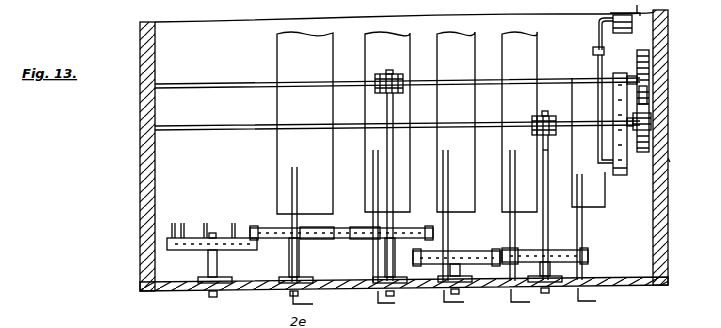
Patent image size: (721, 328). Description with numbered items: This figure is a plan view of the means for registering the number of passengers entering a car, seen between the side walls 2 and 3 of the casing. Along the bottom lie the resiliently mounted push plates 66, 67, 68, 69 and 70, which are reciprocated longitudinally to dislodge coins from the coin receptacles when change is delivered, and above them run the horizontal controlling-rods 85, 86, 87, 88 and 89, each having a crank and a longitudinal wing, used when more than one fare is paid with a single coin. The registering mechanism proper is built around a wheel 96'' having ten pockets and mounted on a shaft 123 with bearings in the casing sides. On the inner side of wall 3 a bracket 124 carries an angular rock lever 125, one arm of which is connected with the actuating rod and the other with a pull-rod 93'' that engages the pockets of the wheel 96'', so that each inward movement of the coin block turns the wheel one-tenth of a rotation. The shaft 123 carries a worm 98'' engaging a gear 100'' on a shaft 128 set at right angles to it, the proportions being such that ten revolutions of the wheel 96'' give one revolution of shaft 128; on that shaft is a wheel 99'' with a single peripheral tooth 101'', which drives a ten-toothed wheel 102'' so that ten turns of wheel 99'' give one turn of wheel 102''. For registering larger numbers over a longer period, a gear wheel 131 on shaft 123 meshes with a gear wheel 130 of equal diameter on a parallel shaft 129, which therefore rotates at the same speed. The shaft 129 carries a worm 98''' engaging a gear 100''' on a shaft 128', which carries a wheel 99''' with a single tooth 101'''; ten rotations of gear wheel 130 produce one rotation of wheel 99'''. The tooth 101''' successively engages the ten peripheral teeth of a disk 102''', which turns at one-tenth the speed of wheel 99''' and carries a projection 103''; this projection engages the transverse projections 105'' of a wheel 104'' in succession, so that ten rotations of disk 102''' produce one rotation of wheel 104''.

The side wall of the casing 2 is at (150, 174).
The side wall of the casing 3 is at (668, 178).
The push plate 66 is at (279, 144).
The push plate 67 is at (374, 160).
The push plate 68 is at (446, 52).
The push plate 69 is at (530, 53).
The push plate 70 is at (600, 207).
The horizontal controlling-rod 85 is at (293, 196).
The horizontal controlling-rod 86 is at (373, 183).
The horizontal controlling-rod 87 is at (443, 181).
The horizontal controlling-rod 88 is at (510, 189).
The horizontal controlling-rod 89 is at (577, 196).
The pull-rod 93'' is at (590, 105).
The wheel 96'' is at (659, 142).
The worm 98'' is at (565, 206).
The worm 98''' is at (411, 184).
The wheel 99'' is at (563, 270).
The wheel 99''' is at (341, 256).
The gear 100'' is at (557, 113).
The gear 100''' is at (386, 66).
The peripheral tooth 101'' is at (525, 245).
The single tooth 101''' is at (363, 244).
The wheel 102'' is at (456, 260).
The disk 102''' is at (322, 244).
The projection 103'' is at (228, 215).
The wheel 104'' is at (218, 265).
The transverse projections 105'' is at (193, 215).
The shaft 123 is at (197, 126).
The bracket 124 is at (634, 30).
The angular rock lever 125 is at (603, 24).
The shaft 128 is at (558, 199).
The shaft 128' is at (444, 306).
The shaft 129 is at (258, 85).
The gear wheel 130 is at (651, 62).
The gear wheel 131 is at (668, 160).